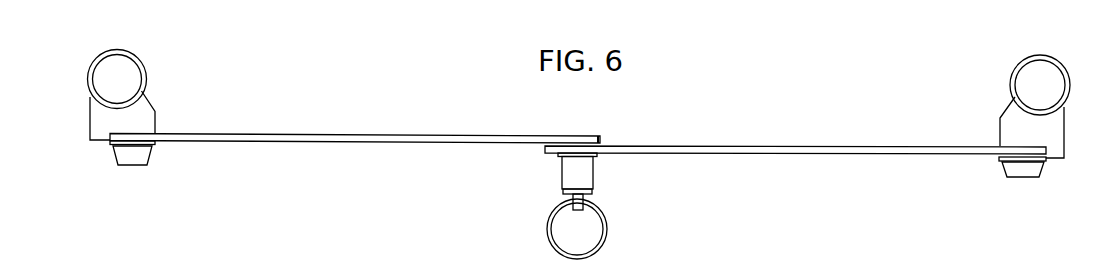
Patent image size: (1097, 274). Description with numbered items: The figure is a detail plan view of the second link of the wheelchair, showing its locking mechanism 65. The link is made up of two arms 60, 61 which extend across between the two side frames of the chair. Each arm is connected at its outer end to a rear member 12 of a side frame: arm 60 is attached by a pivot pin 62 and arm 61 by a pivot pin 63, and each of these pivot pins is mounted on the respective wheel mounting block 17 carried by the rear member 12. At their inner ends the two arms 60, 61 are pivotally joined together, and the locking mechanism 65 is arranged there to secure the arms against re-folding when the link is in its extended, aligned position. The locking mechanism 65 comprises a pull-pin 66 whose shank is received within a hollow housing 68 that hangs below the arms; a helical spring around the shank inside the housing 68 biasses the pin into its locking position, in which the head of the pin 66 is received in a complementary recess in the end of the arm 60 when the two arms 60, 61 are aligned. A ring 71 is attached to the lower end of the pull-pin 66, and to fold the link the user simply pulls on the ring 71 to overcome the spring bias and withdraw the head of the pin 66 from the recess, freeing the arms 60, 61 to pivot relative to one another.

The rear member 12 is at (127, 75).
The wheel mounting block 17 is at (148, 115).
The arm 60 is at (341, 135).
The arm 61 is at (725, 147).
The pivot pin 62 is at (140, 158).
The pivot pin 63 is at (1022, 170).
The locking mechanism 65 is at (576, 178).
The pull-pin 66 is at (582, 206).
The hollow housing 68 is at (585, 178).
The ring 71 is at (546, 229).